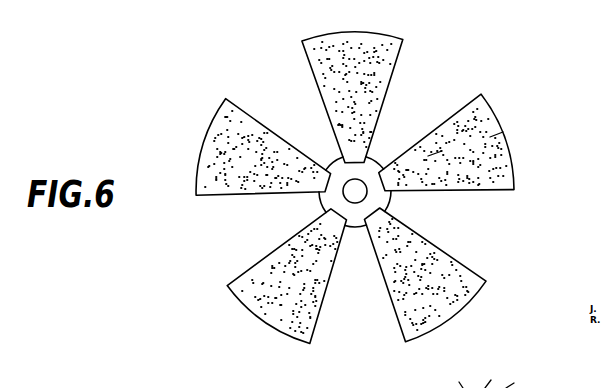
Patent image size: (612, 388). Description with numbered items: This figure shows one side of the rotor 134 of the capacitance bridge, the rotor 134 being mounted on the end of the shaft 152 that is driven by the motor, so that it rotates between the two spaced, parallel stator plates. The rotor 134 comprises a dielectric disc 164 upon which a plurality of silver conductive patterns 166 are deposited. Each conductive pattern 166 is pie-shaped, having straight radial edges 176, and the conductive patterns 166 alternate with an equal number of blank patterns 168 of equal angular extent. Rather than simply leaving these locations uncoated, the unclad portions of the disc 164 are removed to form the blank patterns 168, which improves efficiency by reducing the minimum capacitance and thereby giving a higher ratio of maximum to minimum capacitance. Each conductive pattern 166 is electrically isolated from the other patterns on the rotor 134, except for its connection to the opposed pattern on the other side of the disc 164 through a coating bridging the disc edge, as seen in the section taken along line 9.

The rotor 134 is at (362, 180).
The shaft 152 is at (355, 192).
The dielectric disc 164 is at (293, 70).
The conductive patterns 166 is at (360, 67).
The blank patterns 168 is at (247, 93).
The straight radial edges 176 is at (325, 112).
The section line 9- 9 is at (448, 168).